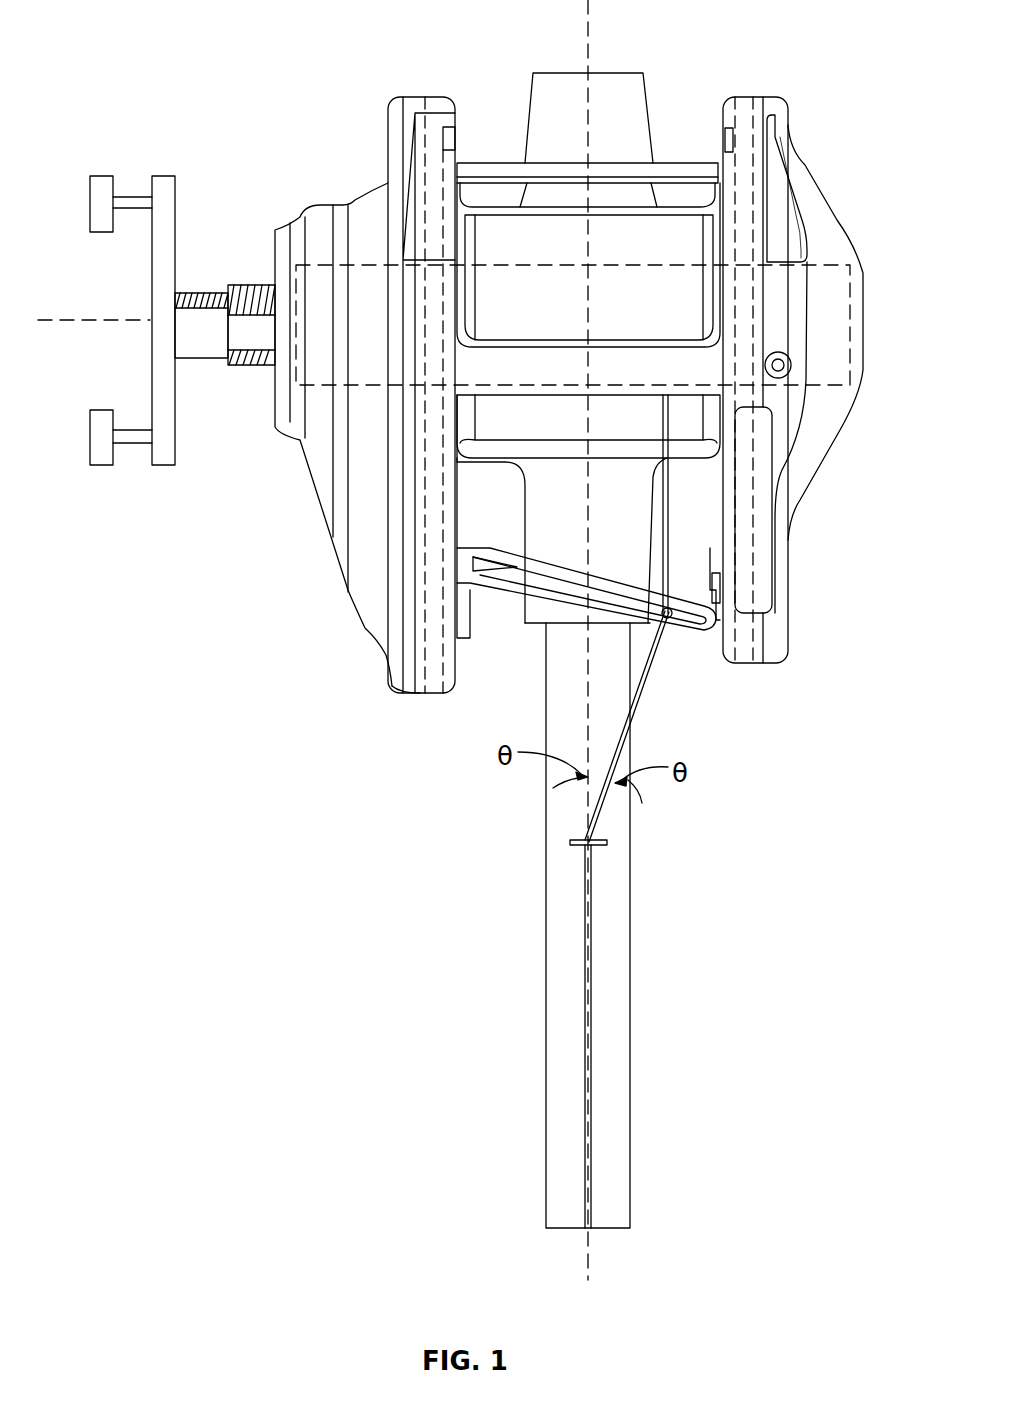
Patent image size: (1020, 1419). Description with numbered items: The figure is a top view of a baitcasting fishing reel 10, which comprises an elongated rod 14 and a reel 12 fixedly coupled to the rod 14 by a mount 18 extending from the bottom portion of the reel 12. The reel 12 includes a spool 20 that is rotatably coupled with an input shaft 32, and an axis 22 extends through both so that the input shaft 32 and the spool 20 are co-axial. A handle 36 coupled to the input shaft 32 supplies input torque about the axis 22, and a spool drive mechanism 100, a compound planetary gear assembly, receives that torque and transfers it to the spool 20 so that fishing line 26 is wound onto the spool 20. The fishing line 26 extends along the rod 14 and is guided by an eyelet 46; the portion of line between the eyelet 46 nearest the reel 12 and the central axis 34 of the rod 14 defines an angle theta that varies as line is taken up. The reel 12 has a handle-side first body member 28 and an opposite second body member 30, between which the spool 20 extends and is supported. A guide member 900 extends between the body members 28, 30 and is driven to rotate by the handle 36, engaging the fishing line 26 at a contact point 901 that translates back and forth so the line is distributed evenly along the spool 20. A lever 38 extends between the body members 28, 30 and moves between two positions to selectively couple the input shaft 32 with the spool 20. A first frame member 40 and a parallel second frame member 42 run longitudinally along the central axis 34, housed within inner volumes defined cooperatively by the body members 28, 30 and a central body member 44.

The fishing reel 10 is at (122, 125).
The reel 12 is at (818, 63).
The rod 14 is at (630, 975).
The mount 18 is at (623, 100).
The spool 20 is at (515, 213).
The axis 22 is at (102, 320).
The fishing line 26 is at (647, 690).
The first body member 28 is at (323, 480).
The second body member 30 is at (833, 440).
The input shaft 32 is at (257, 365).
The central axis 34 is at (588, 1258).
The handle 36 is at (163, 465).
The lever 38 is at (553, 170).
The first frame member 40 is at (433, 693).
The second frame member 42 is at (763, 640).
The body member 44 is at (455, 660).
The eyelet 46 is at (573, 850).
The spool drive mechanism 100 is at (500, 265).
The guide member 900 is at (477, 583).
The contact point 901 is at (668, 622).